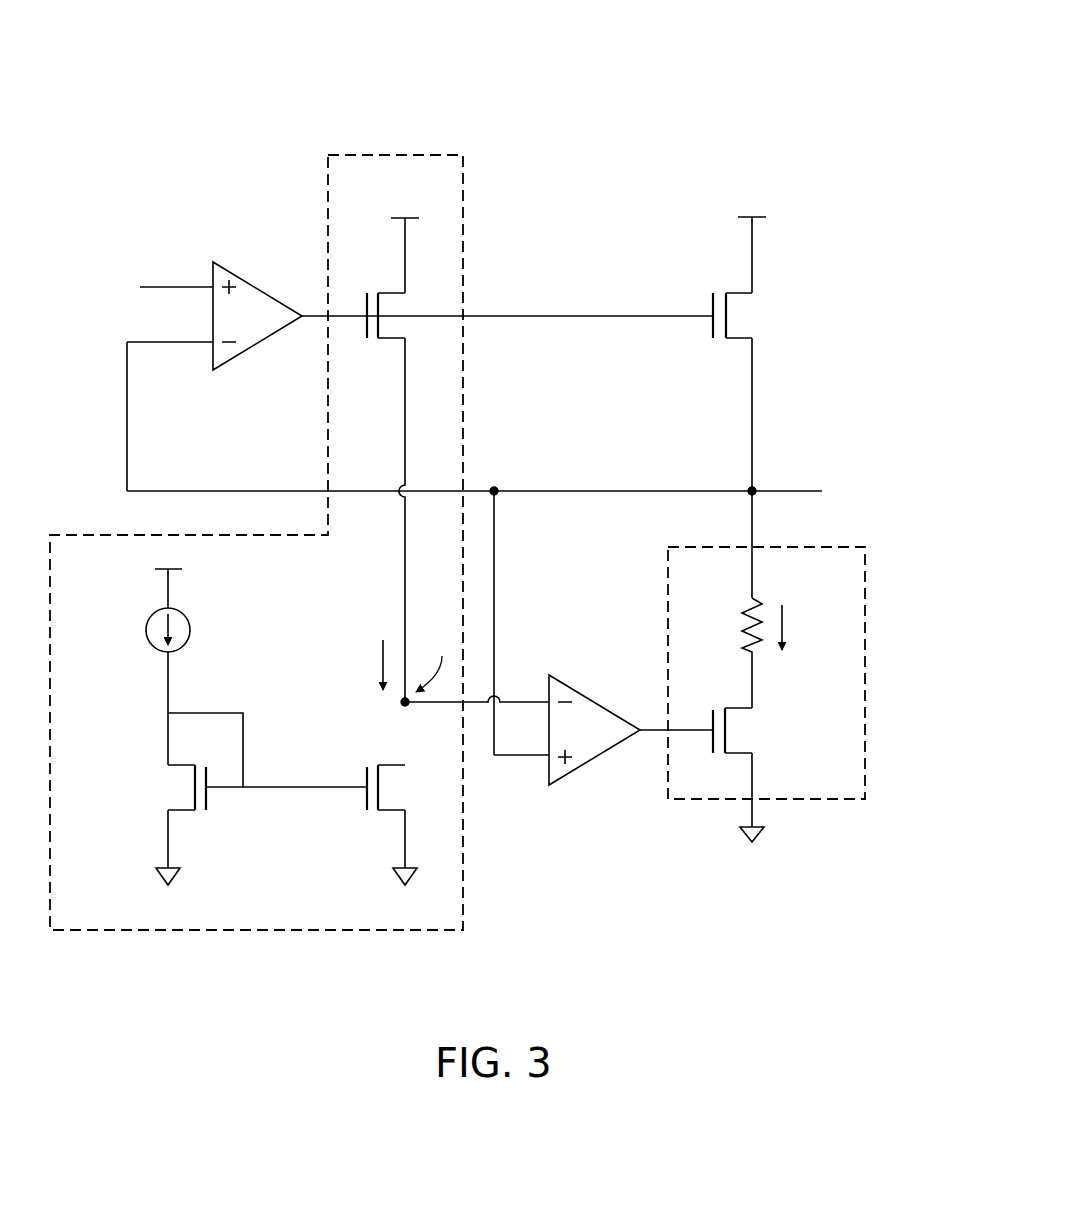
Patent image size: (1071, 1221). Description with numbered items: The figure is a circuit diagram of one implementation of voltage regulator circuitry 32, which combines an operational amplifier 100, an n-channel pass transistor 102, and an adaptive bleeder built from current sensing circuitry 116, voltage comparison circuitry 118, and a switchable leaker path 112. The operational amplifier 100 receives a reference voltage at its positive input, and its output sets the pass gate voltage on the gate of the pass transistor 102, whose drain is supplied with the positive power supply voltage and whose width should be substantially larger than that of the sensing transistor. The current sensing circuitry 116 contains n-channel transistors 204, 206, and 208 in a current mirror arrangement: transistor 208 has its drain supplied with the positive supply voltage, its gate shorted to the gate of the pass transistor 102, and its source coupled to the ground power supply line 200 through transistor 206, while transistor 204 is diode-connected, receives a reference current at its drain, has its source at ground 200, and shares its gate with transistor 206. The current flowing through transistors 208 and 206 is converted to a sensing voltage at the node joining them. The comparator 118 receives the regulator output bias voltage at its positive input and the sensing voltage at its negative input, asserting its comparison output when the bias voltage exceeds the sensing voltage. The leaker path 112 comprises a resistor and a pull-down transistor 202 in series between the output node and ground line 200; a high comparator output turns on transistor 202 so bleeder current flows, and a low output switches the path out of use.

The voltage regulator circuitry 32 is at (738, 68).
The operational amplifier 100 is at (248, 278).
The n-channel pass transistor 102 is at (771, 284).
The switchable leaker path 112 is at (833, 802).
The current sensing circuitry 116 is at (365, 155).
The voltage comparison circuitry 118 is at (536, 789).
The ground power supply line 200 is at (179, 881).
The pull-down transistor 202 is at (760, 721).
The n-channel transistor 204 is at (156, 790).
The n-channel transistor 206 is at (352, 806).
The n-channel transistor 208 is at (422, 335).